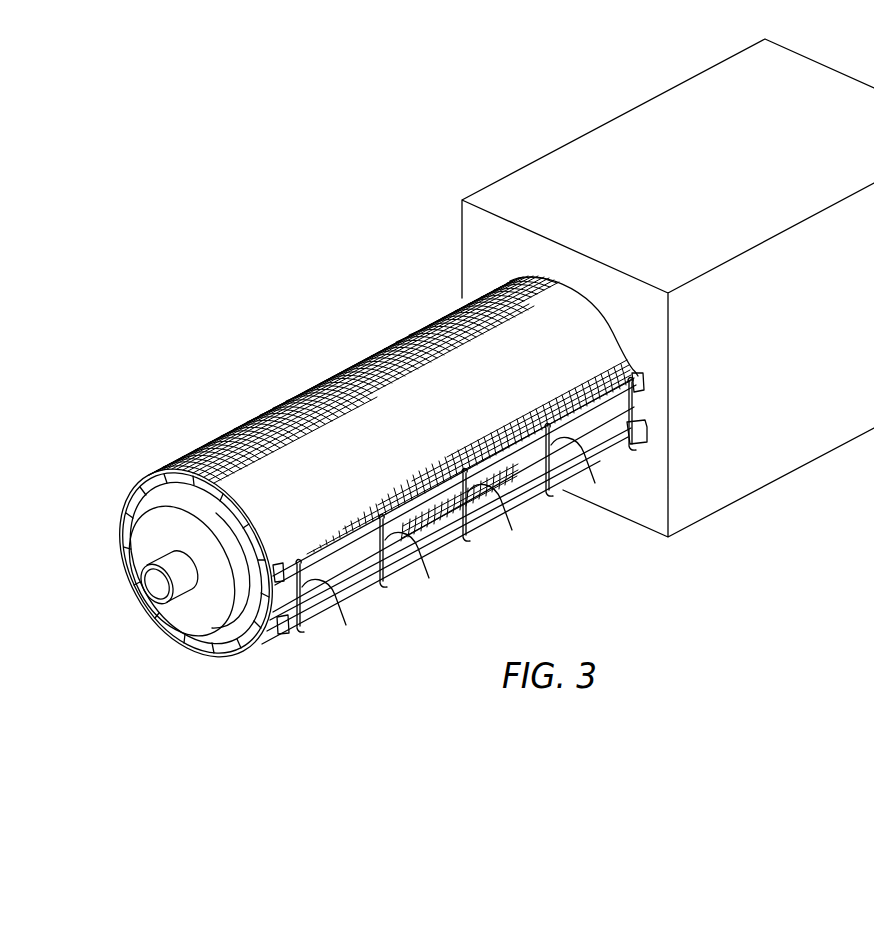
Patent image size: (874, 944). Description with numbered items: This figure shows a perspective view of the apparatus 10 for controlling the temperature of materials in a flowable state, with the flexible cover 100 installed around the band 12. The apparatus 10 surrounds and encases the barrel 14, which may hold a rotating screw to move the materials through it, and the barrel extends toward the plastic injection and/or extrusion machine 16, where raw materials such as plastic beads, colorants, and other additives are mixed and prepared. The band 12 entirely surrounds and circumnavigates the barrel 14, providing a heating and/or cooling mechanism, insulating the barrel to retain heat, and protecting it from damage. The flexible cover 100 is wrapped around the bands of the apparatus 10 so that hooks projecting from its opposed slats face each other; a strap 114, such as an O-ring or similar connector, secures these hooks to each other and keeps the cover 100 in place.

The apparatus 10 is at (207, 306).
The band 12 is at (238, 648).
The barrel 14 is at (143, 592).
The plastic injection and/or extrusion machine 16 is at (840, 318).
The flexible cover 100 is at (222, 446).
The strap 114 is at (327, 577).